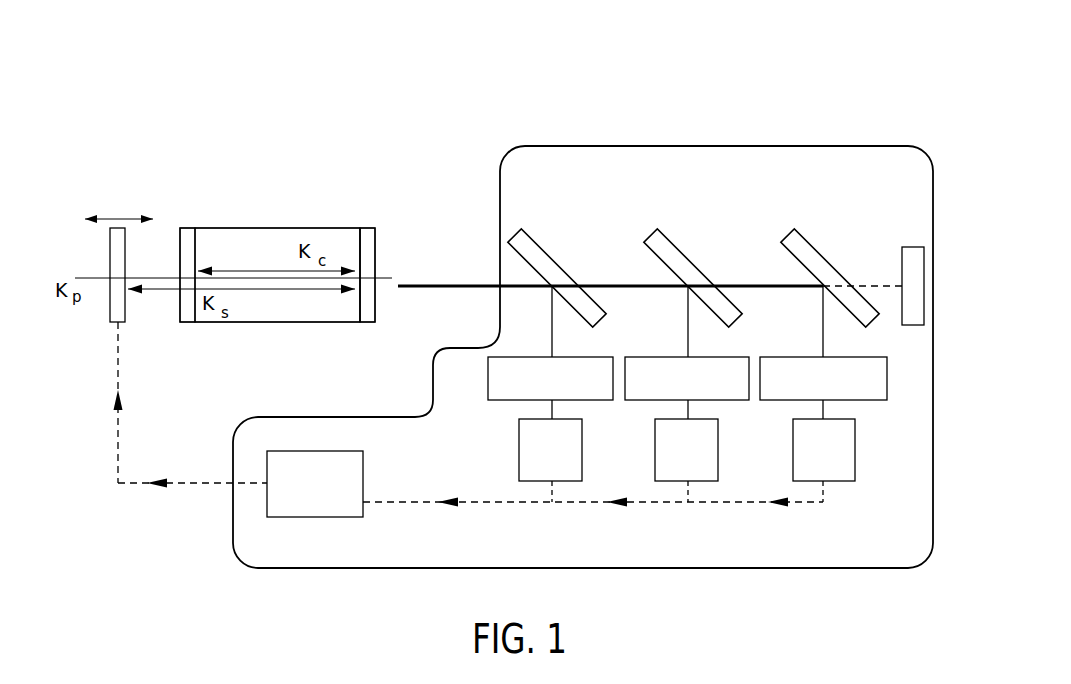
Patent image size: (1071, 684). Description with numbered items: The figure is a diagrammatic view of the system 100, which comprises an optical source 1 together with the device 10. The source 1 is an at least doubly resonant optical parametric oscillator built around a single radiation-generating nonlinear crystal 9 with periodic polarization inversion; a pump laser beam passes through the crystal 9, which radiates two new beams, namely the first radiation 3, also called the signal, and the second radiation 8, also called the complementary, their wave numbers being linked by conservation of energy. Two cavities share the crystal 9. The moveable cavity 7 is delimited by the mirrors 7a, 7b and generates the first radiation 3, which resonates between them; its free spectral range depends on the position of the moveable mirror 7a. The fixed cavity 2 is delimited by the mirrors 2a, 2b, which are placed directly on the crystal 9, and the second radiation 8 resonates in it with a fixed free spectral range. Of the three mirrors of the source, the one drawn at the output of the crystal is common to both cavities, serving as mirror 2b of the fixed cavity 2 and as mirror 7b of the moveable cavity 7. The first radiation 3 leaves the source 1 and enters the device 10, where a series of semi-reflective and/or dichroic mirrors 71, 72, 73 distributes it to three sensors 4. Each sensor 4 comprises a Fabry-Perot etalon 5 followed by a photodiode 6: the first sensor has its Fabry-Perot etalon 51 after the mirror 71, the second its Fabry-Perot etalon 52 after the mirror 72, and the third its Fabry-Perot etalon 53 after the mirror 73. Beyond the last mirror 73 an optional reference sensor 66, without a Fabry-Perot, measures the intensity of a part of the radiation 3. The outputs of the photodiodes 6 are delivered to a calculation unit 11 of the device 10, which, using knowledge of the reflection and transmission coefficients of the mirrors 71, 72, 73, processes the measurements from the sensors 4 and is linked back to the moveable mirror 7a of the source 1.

The optical source 1 is at (340, 162).
The system 100 is at (748, 92).
The nonlinear crystal 9 is at (230, 235).
The second radiation 8 is at (272, 268).
The first radiation 3 is at (492, 285).
The moveable cavity 7 is at (259, 300).
The moveable mirror 7a is at (112, 322).
The mirror 7b is at (375, 313).
The fixed cavity 2 is at (263, 303).
The mirror 2a is at (185, 322).
The mirror 2b is at (365, 322).
The semi-reflective and/or dichroic mirror 71 is at (573, 277).
The semi-reflective and/or dichroic mirror 72 is at (710, 282).
The semi-reflective and/or dichroic mirror 73 is at (847, 267).
The reference sensor 66 is at (912, 262).
The Fabry-Perot etalon 5 is at (673, 419).
The Fabry-Perot etalon 51 is at (488, 393).
The Fabry-Perot etalon 52 is at (740, 400).
The Fabry-Perot etalon 53 is at (887, 372).
The photodiode 6 is at (519, 457).
The sensor 4 is at (575, 497).
The calculation unit 11 is at (315, 517).
The device 10 is at (790, 567).